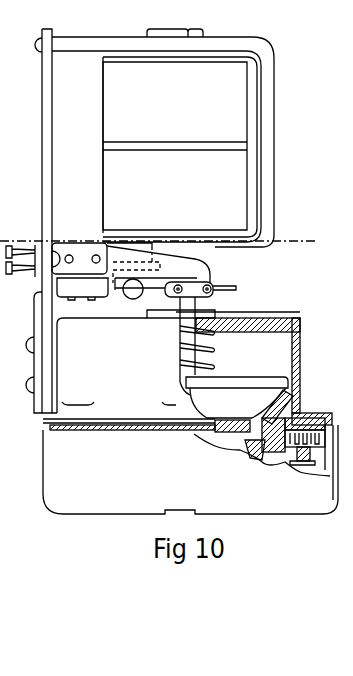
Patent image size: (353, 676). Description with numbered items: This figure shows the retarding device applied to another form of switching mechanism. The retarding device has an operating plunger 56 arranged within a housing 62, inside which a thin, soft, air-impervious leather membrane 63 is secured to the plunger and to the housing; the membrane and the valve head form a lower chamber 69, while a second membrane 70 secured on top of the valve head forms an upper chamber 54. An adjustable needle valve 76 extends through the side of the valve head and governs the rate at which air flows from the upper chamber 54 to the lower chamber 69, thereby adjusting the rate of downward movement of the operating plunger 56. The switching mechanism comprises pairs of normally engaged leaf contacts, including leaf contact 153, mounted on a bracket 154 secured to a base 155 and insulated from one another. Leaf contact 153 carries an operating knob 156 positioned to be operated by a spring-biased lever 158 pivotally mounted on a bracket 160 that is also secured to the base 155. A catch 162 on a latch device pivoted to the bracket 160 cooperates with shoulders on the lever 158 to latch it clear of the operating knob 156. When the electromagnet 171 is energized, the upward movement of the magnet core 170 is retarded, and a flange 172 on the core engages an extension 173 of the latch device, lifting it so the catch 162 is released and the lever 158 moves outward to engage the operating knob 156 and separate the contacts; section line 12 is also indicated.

The section line 12 is at (316, 241).
The upper chamber 54 is at (282, 468).
The operating plunger 56 is at (246, 377).
The housing 62 is at (301, 341).
The membrane 63 is at (302, 394).
The lower chamber 69 is at (232, 436).
The membrane 70 is at (297, 473).
The adjustable needle valve 76 is at (256, 447).
The leaf contact 153 is at (212, 292).
The bracket 154 is at (74, 246).
The base 155 is at (42, 184).
The operating knob 156 is at (177, 300).
The lever 158 is at (238, 287).
The bracket 160 is at (34, 316).
The catch 162 is at (125, 296).
The magnet core 170 is at (207, 262).
The electromagnet 171 is at (175, 145).
The flange 172 is at (215, 313).
The extension 173 is at (144, 258).